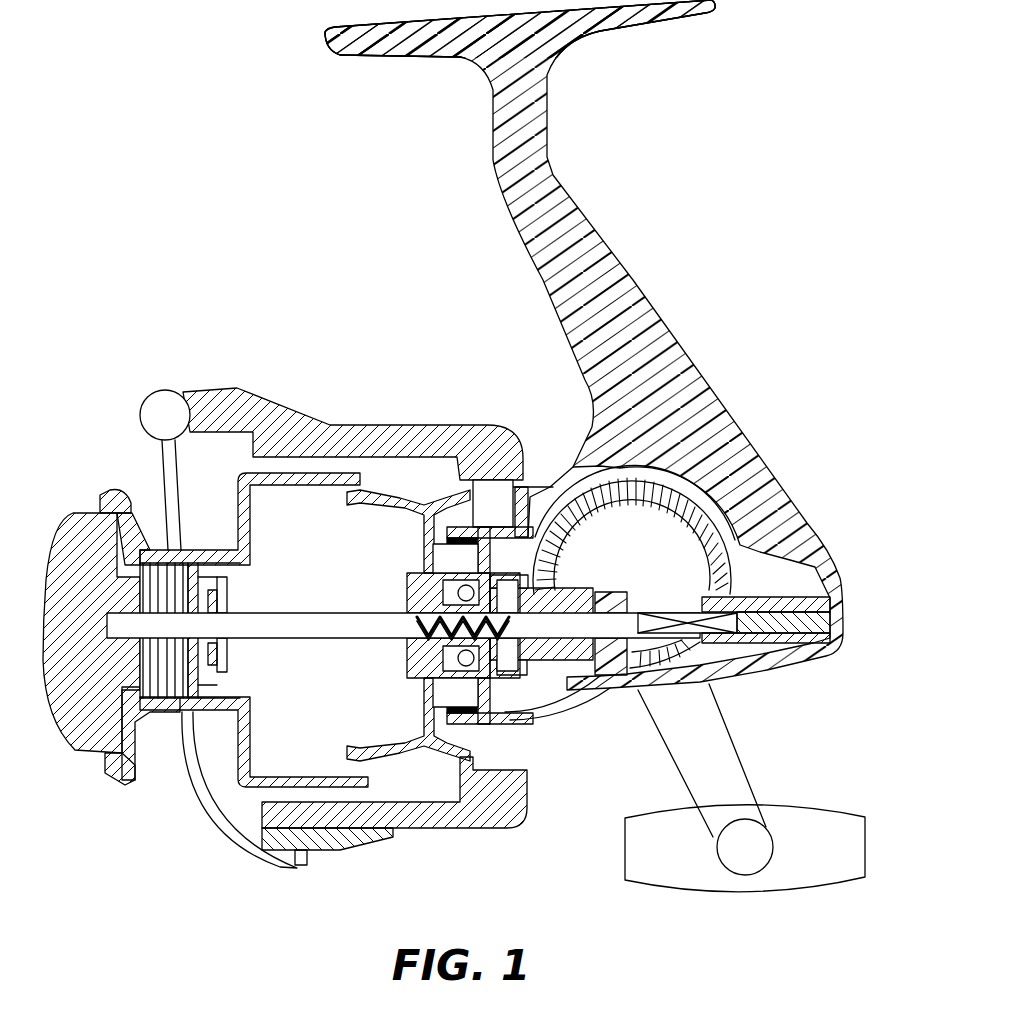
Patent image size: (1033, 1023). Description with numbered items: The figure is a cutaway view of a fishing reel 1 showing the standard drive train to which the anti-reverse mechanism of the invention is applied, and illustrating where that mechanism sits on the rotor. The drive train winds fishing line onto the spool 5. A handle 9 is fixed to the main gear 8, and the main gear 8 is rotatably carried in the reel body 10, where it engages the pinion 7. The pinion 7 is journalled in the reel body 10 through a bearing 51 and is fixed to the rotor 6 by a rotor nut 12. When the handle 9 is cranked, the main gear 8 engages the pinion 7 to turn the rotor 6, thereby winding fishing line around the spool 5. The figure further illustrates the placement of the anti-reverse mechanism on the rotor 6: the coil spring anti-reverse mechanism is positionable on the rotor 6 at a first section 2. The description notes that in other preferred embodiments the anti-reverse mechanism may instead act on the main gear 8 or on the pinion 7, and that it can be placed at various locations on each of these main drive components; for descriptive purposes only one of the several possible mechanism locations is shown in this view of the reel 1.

The reel 1 is at (584, 360).
The first section 2 is at (465, 528).
The spool 5 is at (168, 713).
The rotor 6 is at (400, 505).
The pinion 7 is at (510, 663).
The main gear 8 is at (718, 567).
The handle 9 is at (723, 758).
The reel body 10 is at (726, 437).
The rotor nut 12 is at (410, 658).
The bearing 51 is at (467, 668).